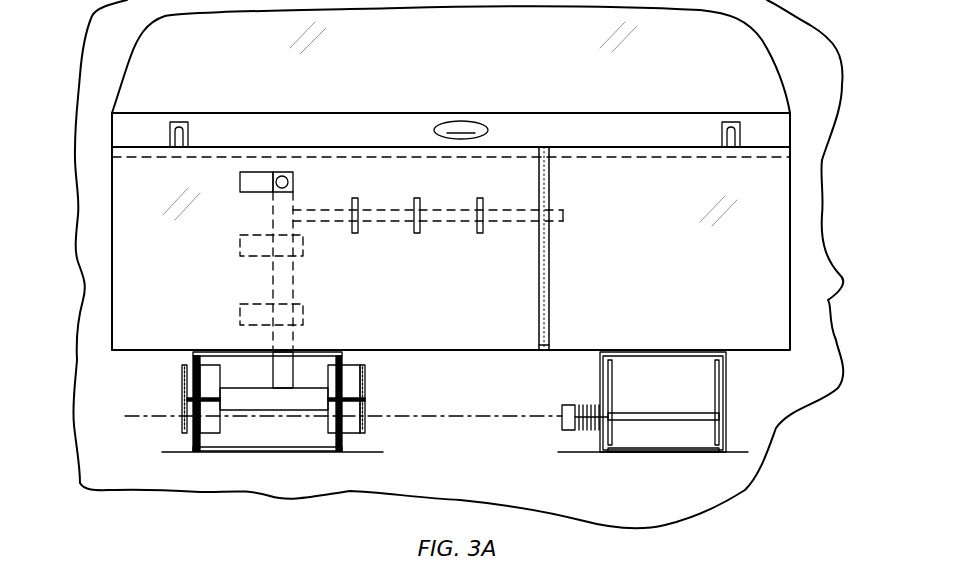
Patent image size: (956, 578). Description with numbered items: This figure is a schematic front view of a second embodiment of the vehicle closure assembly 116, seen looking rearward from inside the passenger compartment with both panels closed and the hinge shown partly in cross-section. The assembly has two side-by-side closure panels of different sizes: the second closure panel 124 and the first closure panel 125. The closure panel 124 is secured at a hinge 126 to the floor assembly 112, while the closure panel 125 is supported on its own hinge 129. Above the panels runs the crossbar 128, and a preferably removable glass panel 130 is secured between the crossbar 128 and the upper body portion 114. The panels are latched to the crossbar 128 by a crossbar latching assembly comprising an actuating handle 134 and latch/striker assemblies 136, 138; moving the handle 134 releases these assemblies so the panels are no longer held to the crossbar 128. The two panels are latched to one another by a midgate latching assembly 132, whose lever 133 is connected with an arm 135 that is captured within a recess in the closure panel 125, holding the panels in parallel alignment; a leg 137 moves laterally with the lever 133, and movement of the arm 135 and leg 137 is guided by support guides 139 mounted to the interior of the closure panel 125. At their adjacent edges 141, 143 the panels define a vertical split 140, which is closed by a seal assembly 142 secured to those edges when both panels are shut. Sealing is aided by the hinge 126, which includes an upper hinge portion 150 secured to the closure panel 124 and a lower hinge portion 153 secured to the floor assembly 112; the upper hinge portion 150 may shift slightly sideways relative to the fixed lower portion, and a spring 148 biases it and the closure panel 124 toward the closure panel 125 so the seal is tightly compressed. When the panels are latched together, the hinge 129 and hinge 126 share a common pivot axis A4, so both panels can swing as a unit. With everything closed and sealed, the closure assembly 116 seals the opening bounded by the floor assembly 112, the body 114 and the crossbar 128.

The floor assembly 112 is at (434, 490).
The upper body portion 114 is at (98, 42).
The vehicle closure assembly 116 is at (832, 172).
The second closure panel 124 is at (790, 221).
The first closure panel 125 is at (112, 275).
The hinge 126 is at (685, 427).
The crossbar 128 is at (688, 130).
The hinge 129 is at (166, 377).
The glass panel 130 is at (451, 48).
The midgate latching assembly 132 is at (366, 256).
The lever 133 is at (282, 176).
The actuating handle 134 is at (461, 129).
The arm 135 is at (447, 222).
The latch/striker assembly 136 is at (191, 131).
The leg 137 is at (273, 283).
The latch/striker assembly 138 is at (741, 131).
The support guides 139 is at (254, 235).
The vertical split 140 is at (543, 351).
The edge 141 is at (539, 300).
The seal assembly 142 is at (550, 228).
The edge 143 is at (549, 300).
The spring 148 is at (585, 431).
The upper hinge portion 150 is at (612, 365).
The lower hinge portion 153 is at (640, 452).
The pivot axis A4 is at (400, 417).